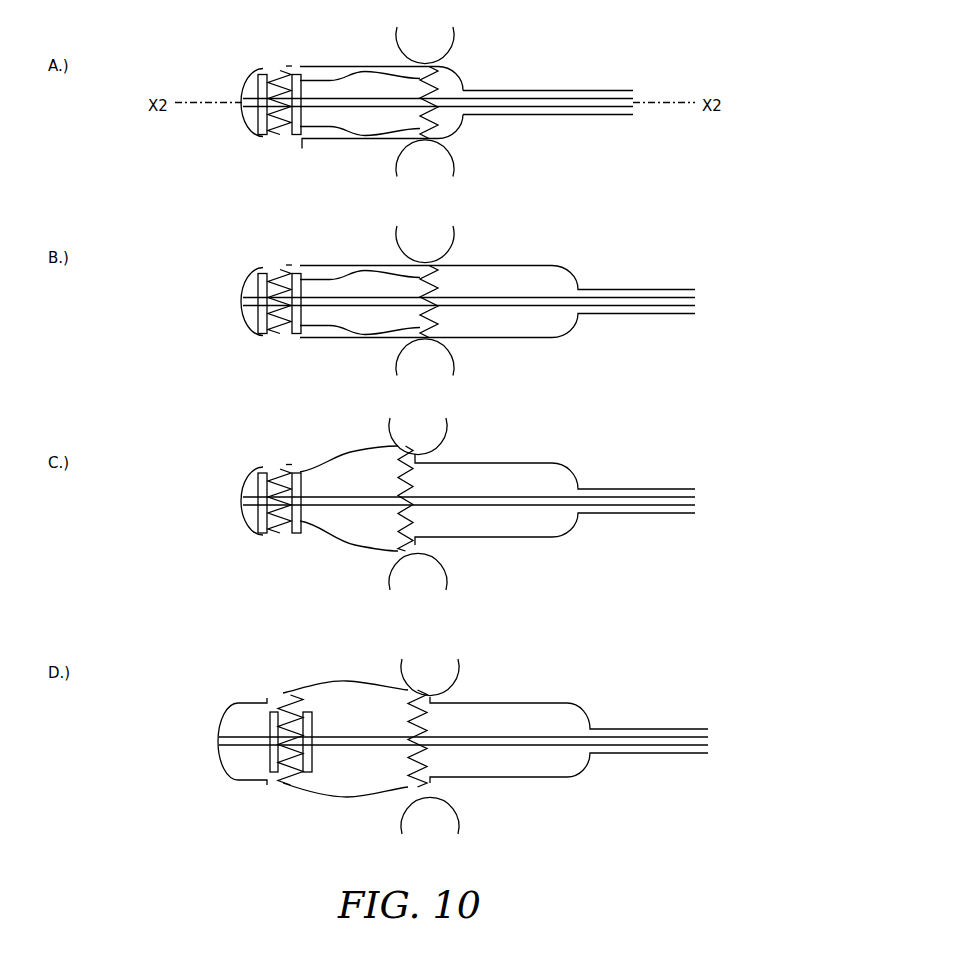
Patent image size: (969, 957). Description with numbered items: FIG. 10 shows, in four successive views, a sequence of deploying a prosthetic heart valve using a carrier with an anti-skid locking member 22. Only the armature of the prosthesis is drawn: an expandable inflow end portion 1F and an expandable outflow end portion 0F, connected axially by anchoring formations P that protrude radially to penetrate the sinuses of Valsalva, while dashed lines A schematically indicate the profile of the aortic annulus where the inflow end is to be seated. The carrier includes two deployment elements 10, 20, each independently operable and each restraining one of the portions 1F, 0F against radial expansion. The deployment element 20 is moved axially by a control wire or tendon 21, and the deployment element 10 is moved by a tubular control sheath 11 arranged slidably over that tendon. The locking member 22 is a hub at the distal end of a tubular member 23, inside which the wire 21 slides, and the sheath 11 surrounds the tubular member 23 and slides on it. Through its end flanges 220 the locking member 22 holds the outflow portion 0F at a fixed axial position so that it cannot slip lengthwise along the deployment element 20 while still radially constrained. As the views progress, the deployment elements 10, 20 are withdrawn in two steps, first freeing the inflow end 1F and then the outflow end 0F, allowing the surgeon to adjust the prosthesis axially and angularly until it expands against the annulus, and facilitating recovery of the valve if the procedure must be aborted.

The deployment element 10 is at (449, 66).
The tubular control sheath 11 is at (618, 116).
The deployment element 20 is at (243, 118).
The control wire or tendon 21 is at (246, 100).
The anti-skid locking member 22 is at (285, 144).
The tubular member 23 is at (330, 97).
The end flanges 220 is at (333, 723).
The outflow end portion 0F is at (265, 136).
The inflow end portion 1F is at (441, 721).
The anchoring formations P is at (383, 128).
The aortic annulus profile A is at (397, 43).